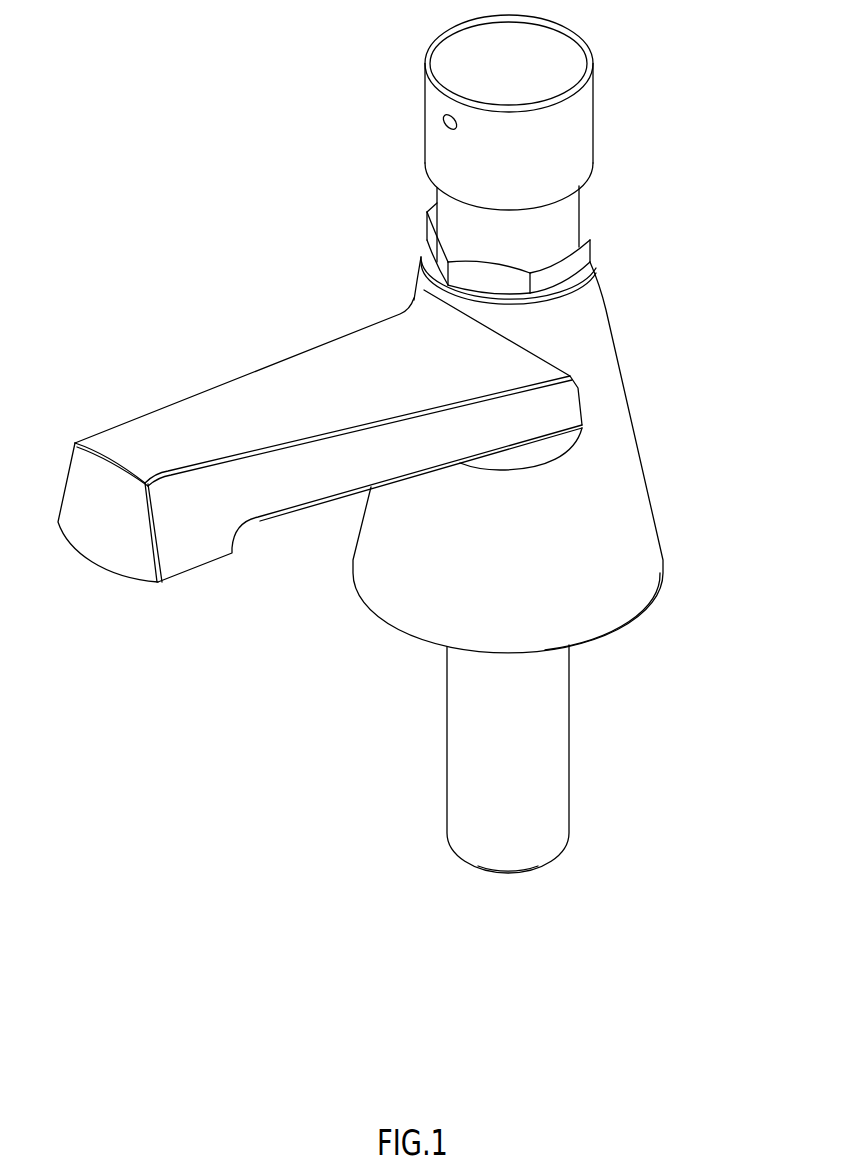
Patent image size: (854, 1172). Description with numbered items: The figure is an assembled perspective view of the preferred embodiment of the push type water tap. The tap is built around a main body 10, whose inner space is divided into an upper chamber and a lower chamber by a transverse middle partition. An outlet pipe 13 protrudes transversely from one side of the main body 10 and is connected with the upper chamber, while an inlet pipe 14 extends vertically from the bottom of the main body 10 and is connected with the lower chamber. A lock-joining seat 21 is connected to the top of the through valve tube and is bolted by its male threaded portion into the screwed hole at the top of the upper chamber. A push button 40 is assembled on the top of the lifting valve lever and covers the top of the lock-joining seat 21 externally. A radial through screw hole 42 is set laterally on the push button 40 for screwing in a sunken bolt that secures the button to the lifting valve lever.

The main body 10 is at (365, 636).
The outlet pipe 13 is at (245, 397).
The inlet pipe 14 is at (569, 728).
The lock-joining seat 21 is at (578, 205).
The push button 40 is at (592, 113).
The radial through screw hole 42 is at (445, 123).